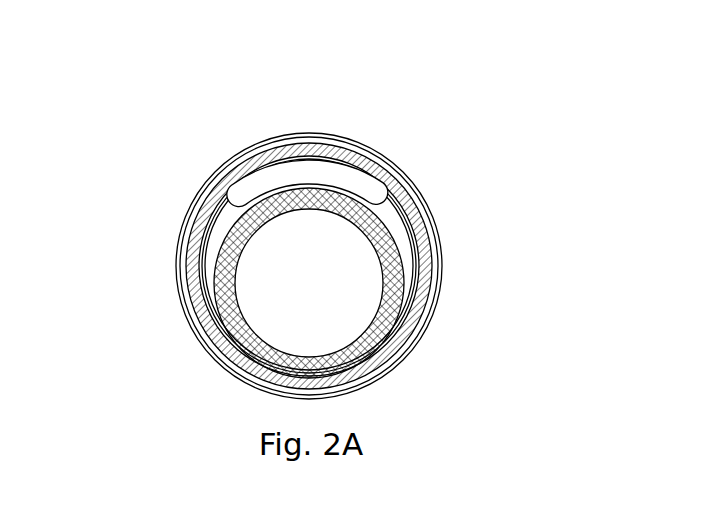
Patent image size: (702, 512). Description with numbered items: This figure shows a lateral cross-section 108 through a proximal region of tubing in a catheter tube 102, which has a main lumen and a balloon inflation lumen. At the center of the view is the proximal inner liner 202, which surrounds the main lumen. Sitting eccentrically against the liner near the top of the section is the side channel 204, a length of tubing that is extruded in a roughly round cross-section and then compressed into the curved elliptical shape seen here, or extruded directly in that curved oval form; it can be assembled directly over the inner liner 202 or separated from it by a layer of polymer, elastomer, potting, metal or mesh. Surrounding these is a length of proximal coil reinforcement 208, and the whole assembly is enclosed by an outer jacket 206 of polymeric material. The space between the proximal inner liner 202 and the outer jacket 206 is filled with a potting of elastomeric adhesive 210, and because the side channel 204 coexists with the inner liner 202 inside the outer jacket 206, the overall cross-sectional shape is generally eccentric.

The catheter tube 102 is at (478, 345).
The lateral cross-section 108 is at (163, 355).
The proximal inner liner 202 is at (184, 265).
The side channel 204 is at (338, 158).
The outer jacket 206 is at (232, 163).
The proximal coil reinforcement 208 is at (420, 213).
The elastomeric adhesive potting 210 is at (407, 257).